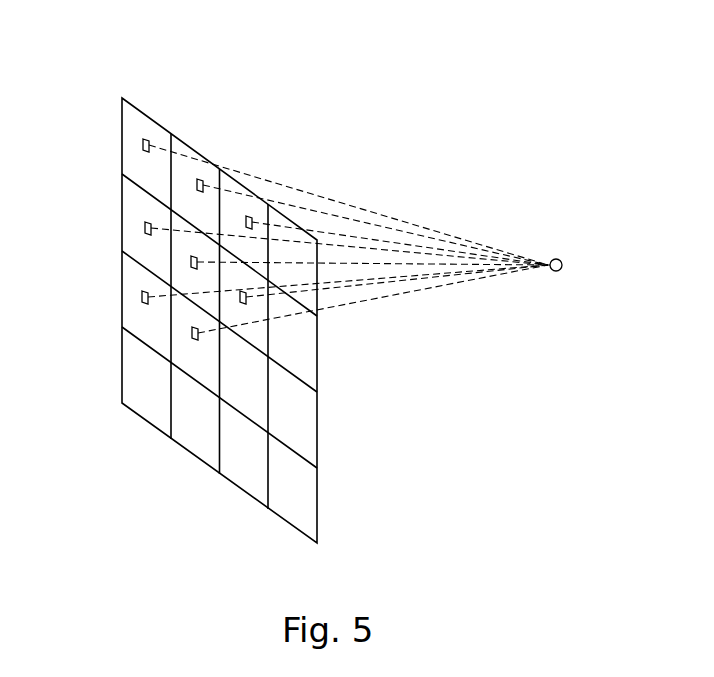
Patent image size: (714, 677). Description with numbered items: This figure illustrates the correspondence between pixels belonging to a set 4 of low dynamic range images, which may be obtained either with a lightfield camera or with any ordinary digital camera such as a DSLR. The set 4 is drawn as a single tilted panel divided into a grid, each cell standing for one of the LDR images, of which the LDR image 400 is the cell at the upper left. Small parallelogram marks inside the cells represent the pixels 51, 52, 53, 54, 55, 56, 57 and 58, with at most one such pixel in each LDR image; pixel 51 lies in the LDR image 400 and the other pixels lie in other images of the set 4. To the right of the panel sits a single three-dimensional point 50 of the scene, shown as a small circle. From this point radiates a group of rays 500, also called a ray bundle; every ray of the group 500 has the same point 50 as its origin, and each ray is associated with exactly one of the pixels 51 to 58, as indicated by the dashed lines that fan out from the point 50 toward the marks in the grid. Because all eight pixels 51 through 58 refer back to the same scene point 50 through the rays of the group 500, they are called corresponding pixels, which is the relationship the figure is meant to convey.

The set of LDR images 4 is at (192, 288).
The LDR image 400 is at (145, 127).
The group of rays 500 is at (404, 200).
The 3D point of the scene 50 is at (556, 258).
The pixel 51 is at (142, 145).
The pixel 52 is at (199, 178).
The pixel 53 is at (249, 215).
The pixel 54 is at (144, 228).
The pixel 55 is at (190, 262).
The pixel 56 is at (248, 297).
The pixel 57 is at (141, 297).
The pixel 58 is at (191, 333).